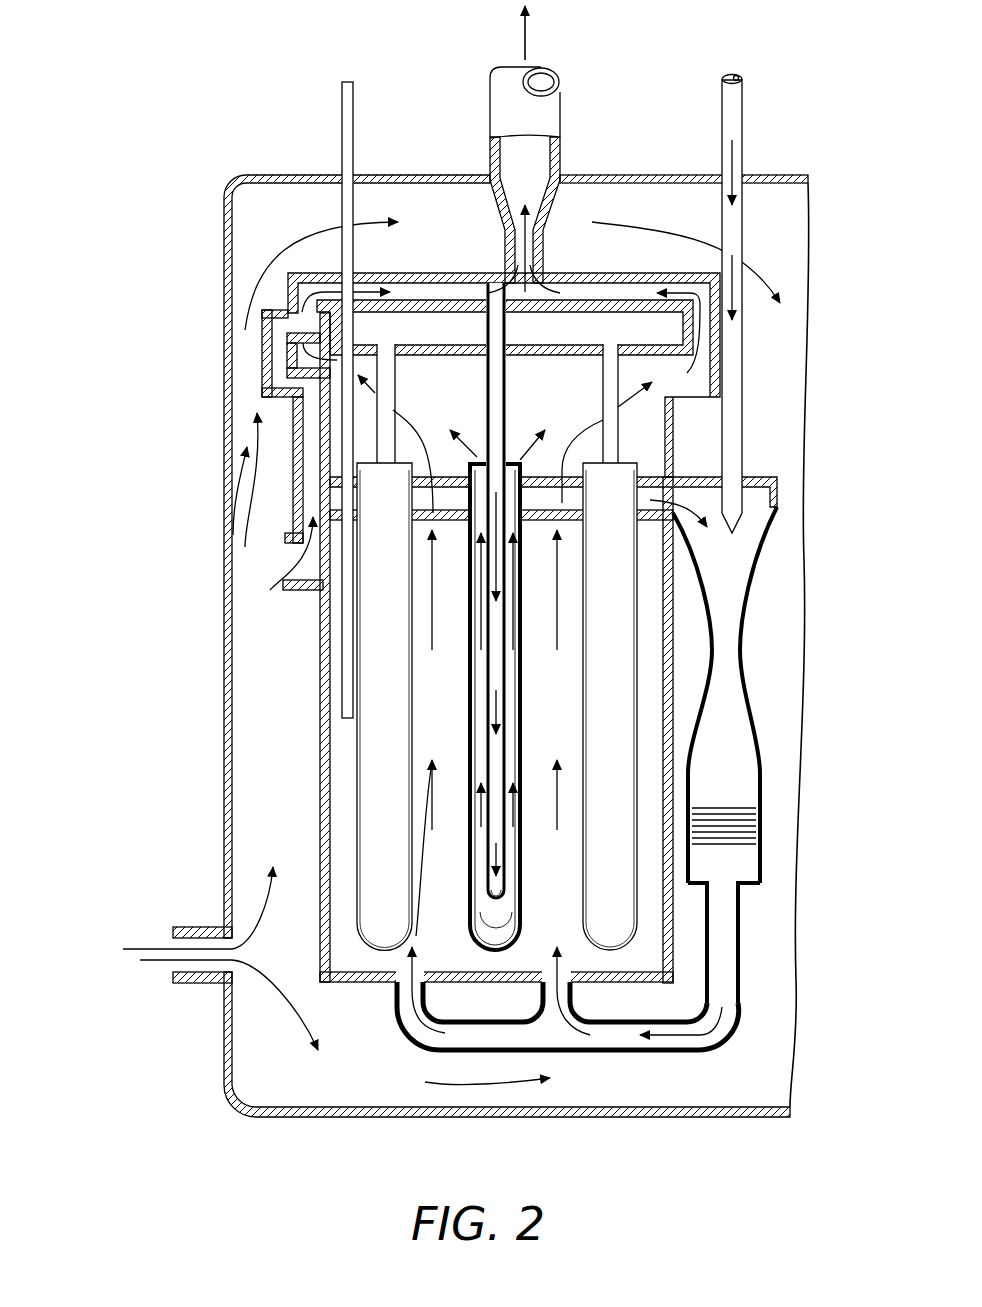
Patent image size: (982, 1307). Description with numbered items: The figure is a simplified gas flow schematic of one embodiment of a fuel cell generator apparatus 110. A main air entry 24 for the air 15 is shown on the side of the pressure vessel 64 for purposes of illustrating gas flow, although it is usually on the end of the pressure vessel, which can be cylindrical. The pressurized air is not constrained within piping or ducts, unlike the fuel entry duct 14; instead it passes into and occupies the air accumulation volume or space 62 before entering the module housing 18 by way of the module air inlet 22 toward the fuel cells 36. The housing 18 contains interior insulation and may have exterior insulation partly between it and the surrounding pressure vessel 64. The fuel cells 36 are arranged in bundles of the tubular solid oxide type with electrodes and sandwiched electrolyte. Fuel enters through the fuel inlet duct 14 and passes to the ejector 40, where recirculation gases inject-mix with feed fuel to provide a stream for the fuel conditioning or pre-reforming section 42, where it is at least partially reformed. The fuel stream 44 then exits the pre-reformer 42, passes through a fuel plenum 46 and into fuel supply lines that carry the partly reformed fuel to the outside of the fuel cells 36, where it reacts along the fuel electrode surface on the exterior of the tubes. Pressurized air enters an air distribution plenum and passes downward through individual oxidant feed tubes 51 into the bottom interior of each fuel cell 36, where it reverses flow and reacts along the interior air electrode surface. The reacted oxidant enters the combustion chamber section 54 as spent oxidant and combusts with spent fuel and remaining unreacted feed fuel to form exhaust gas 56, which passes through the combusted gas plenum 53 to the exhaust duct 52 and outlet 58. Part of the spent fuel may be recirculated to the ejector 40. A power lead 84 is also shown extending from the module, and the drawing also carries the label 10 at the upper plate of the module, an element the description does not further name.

The fuel cell generator apparatus 110 is at (466, 662).
The top plate 10 is at (437, 273).
The fuel inlet duct 14 is at (745, 130).
The air 15 is at (150, 960).
The module housing 18 is at (318, 845).
The module air inlet 22 is at (297, 590).
The main air entry 24 is at (198, 927).
The fuel cells 36 is at (467, 757).
The ejector 40 is at (730, 530).
The pre-reforming section 42 is at (760, 830).
The fuel stream 44 is at (713, 1037).
The fuel plenum 46 is at (407, 1045).
The oxidant feed tube 51 is at (507, 420).
The exhaust duct 52 is at (478, 273).
The combusted gas plenum 53 is at (617, 297).
The combustion chamber section 54 is at (647, 438).
The exhaust gas 56 is at (530, 38).
The outlet 58 is at (490, 107).
The air accumulation space 62 is at (262, 222).
The pressure vessel 64 is at (225, 620).
The power lead 84 is at (342, 117).